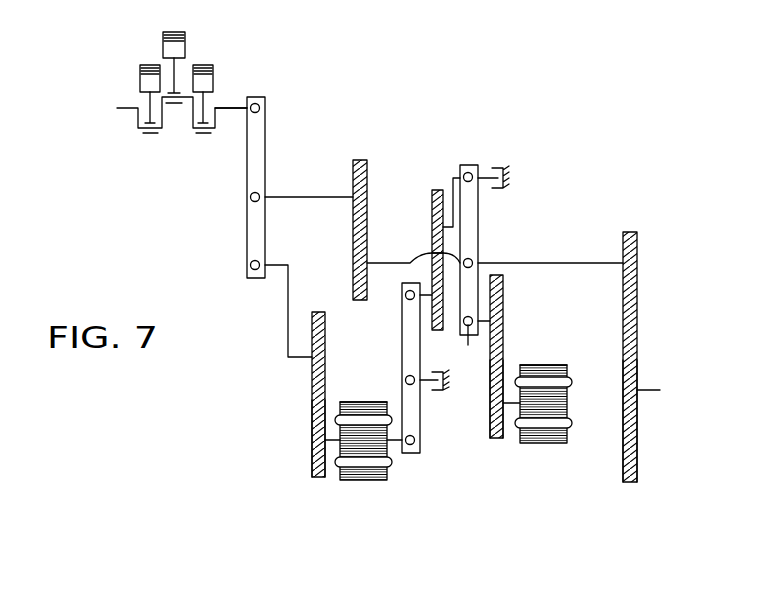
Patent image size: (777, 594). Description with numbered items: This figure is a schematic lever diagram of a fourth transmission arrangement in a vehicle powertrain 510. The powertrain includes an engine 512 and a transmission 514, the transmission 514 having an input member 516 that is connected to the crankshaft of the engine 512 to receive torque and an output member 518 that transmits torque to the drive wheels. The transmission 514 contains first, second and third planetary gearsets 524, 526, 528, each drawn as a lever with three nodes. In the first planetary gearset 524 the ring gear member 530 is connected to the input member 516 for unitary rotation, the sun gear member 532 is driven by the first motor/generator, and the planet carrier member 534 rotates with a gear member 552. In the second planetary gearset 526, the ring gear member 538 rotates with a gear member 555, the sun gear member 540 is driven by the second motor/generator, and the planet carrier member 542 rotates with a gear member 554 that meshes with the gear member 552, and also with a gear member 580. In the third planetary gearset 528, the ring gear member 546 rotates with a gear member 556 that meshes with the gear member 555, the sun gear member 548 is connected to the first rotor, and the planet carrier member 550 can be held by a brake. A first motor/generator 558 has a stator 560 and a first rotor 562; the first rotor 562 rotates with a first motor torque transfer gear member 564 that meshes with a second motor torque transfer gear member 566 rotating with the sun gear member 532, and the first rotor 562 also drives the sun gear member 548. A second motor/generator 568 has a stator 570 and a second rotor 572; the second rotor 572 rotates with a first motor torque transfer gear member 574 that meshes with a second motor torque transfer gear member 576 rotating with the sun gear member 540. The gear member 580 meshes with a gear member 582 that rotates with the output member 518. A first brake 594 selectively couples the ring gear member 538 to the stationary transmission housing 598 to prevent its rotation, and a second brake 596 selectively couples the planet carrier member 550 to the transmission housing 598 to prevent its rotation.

The vehicle powertrain 510 is at (557, 114).
The engine 512 is at (140, 80).
The transmission 514 is at (585, 163).
The input member 516 is at (230, 108).
The output member 518 is at (653, 388).
The first planetary gearset 524 is at (266, 150).
The second planetary gearset 526 is at (478, 220).
The third planetary gearset 528 is at (420, 413).
The ring gear member 530 is at (262, 106).
The sun gear member 532 is at (249, 265).
The planet carrier member 534 is at (249, 197).
The ring gear member 538 is at (466, 173).
The sun gear member 540 is at (468, 345).
The planet carrier member 542 is at (473, 260).
The ring gear member 546 is at (403, 295).
The sun gear member 548 is at (410, 448).
The planet carrier member 550 is at (404, 380).
The gear member 552 is at (353, 187).
The gear member 554 is at (353, 260).
The gear member 555 is at (438, 192).
The gear member 556 is at (430, 277).
The first motor/generator 558 is at (363, 492).
The stator 560 is at (382, 402).
The first rotor 562 is at (330, 444).
The first motor torque transfer gear member 564 is at (311, 438).
The second motor torque transfer gear member 566 is at (311, 378).
The second motor/generator 568 is at (555, 457).
The stator 570 is at (542, 365).
The second rotor 572 is at (510, 404).
The first motor torque transfer gear member 574 is at (496, 440).
The second motor torque transfer gear member 576 is at (504, 337).
The gear member 580 is at (638, 263).
The gear member 582 is at (638, 322).
The first brake 594 is at (503, 118).
The second brake 596 is at (437, 405).
The transmission housing 598 is at (507, 175).